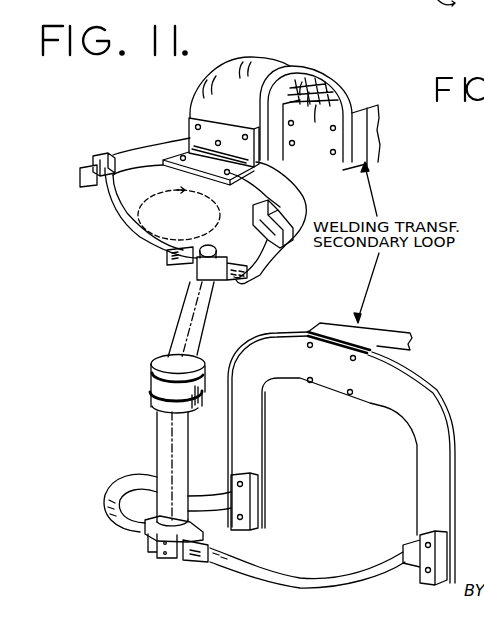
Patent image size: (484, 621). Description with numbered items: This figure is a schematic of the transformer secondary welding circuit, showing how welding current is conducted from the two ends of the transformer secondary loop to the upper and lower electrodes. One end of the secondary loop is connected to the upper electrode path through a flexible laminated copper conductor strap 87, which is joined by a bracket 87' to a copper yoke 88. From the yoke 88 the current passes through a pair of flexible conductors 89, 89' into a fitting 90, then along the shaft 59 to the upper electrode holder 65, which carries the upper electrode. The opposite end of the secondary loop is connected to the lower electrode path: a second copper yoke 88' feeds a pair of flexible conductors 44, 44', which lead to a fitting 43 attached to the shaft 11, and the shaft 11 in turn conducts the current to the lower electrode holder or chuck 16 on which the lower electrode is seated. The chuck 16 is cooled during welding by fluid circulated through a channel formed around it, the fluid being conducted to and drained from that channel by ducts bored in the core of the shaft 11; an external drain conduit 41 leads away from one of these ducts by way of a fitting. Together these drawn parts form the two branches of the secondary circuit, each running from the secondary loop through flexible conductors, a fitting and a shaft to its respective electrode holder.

The flexible laminated conductor strap 87 is at (324, 97).
The bracket 87' is at (149, 127).
The yoke 88 is at (167, 197).
The flexible conductor 89 is at (127, 213).
The flexible conductor 89' is at (261, 295).
The fitting 90 is at (184, 271).
The shaft 59 is at (180, 313).
The electrode holder 65 is at (160, 363).
The holder or chuck 16 is at (150, 398).
The shaft 11 is at (184, 443).
The fitting 43 is at (147, 548).
The flexible conductor 44 is at (164, 498).
The flexible conductor 44' is at (328, 570).
The yoke 88' is at (341, 453).
The drain conduit 41 is at (456, 13).